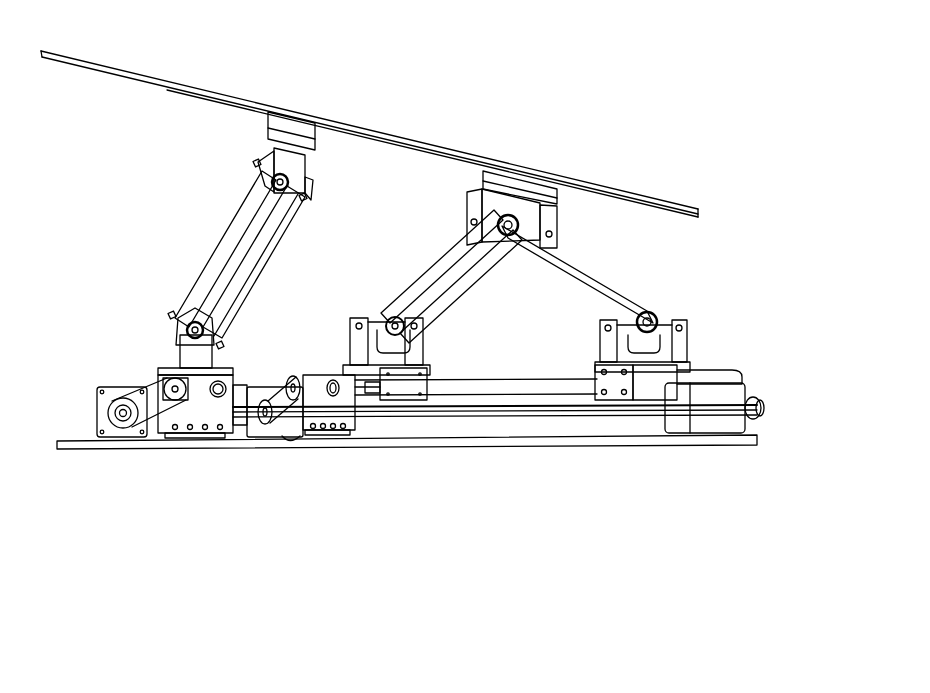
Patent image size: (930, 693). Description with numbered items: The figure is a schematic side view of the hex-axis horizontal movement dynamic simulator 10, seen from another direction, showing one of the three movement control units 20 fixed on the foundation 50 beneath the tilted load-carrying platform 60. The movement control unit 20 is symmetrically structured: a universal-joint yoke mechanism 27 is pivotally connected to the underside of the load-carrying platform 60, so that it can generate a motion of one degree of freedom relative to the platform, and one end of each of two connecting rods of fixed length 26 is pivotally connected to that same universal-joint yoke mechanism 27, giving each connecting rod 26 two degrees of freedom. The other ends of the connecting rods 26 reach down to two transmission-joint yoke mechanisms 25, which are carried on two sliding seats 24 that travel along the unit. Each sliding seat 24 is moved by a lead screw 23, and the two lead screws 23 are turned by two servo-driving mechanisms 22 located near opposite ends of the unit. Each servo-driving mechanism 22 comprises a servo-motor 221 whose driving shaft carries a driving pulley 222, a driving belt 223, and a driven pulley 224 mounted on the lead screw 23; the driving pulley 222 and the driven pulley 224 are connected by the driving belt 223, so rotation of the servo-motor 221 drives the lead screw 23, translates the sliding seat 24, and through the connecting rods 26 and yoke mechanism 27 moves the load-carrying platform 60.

The hex-axis horizontal movement dynamic simulator 10 is at (371, 69).
The load-carrying platform 60 is at (593, 181).
The universal-joint yoke mechanism 27 is at (258, 140).
The connecting rod of fixed length 26 is at (213, 252).
The transmission-joint yoke mechanism 25 is at (345, 316).
The movement control unit 20 is at (534, 372).
The lead screw 23 is at (451, 385).
The sliding seat 24 is at (399, 390).
The servo-driving mechanism 22 is at (439, 403).
The servo-motor 221 is at (97, 413).
The driving pulley 222 is at (126, 422).
The driving belt 223 is at (155, 412).
The driven pulley 224 is at (180, 400).
The foundation 50 is at (72, 447).